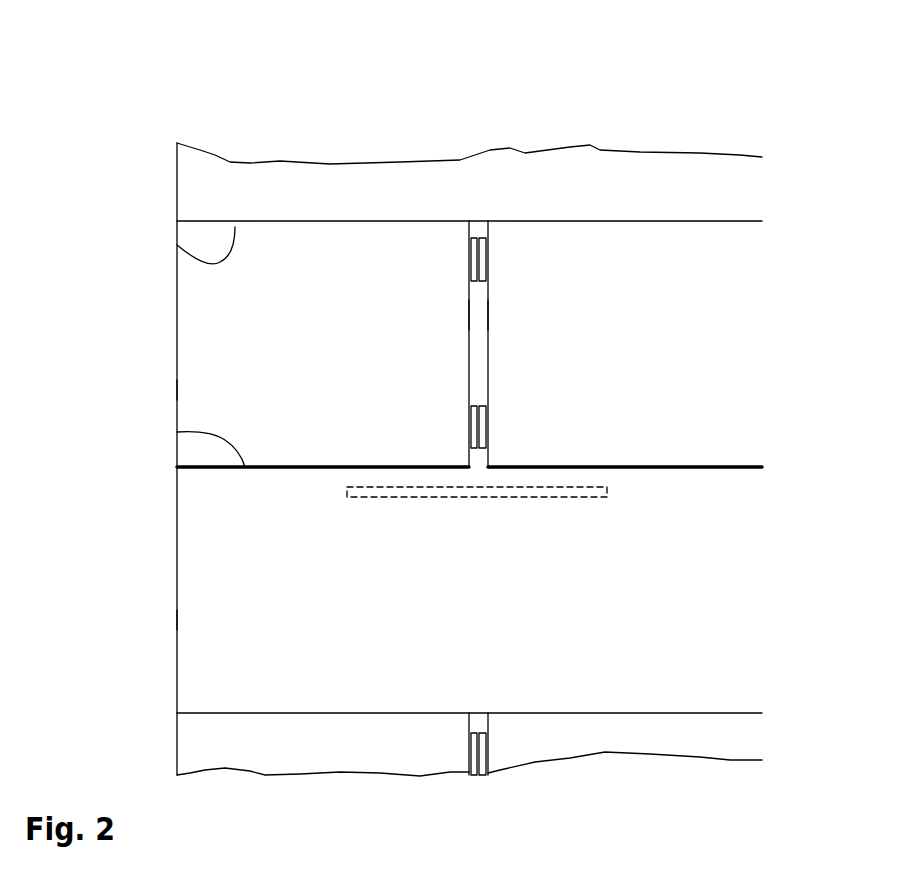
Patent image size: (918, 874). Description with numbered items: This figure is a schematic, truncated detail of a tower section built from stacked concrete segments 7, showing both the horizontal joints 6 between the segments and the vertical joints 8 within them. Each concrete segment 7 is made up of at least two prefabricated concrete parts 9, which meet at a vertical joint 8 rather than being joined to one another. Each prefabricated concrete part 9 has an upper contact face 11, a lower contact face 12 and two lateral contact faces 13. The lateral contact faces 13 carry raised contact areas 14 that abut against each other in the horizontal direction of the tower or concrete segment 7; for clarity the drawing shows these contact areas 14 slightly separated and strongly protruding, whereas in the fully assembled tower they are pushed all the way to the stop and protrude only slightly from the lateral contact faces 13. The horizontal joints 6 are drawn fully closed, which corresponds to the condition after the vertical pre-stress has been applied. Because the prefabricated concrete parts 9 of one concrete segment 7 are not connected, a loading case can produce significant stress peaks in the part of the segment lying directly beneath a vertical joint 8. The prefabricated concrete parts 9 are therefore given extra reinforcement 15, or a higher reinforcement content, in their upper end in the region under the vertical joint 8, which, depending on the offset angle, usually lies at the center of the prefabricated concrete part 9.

The horizontal joint 6 is at (509, 590).
The concrete segment 7 is at (785, 222).
The vertical joint 8 is at (280, 498).
The prefabricated concrete part 9 is at (137, 522).
The upper contact face 11 is at (177, 245).
The lower contact face 12 is at (177, 432).
The lateral contact face 13 is at (489, 206).
The contact area 14 is at (486, 396).
The extra reinforcement 15 is at (334, 530).